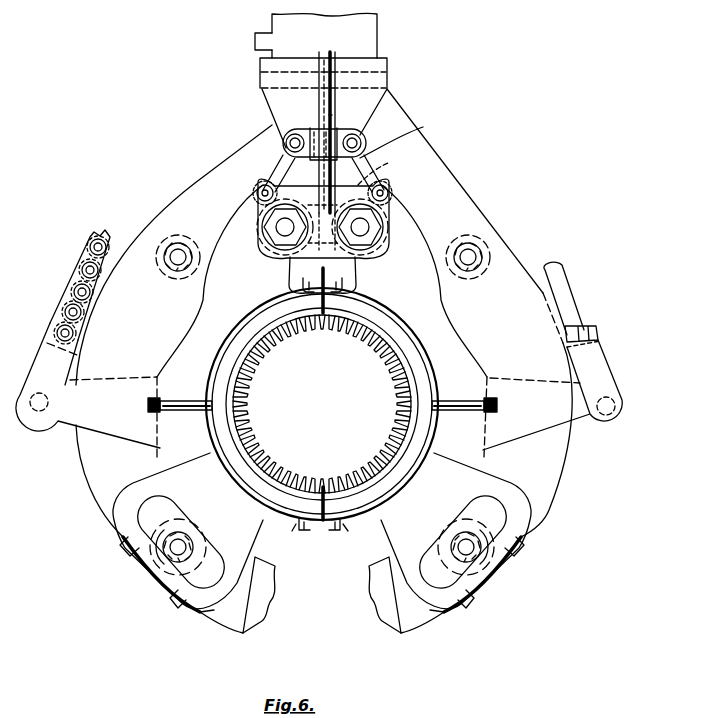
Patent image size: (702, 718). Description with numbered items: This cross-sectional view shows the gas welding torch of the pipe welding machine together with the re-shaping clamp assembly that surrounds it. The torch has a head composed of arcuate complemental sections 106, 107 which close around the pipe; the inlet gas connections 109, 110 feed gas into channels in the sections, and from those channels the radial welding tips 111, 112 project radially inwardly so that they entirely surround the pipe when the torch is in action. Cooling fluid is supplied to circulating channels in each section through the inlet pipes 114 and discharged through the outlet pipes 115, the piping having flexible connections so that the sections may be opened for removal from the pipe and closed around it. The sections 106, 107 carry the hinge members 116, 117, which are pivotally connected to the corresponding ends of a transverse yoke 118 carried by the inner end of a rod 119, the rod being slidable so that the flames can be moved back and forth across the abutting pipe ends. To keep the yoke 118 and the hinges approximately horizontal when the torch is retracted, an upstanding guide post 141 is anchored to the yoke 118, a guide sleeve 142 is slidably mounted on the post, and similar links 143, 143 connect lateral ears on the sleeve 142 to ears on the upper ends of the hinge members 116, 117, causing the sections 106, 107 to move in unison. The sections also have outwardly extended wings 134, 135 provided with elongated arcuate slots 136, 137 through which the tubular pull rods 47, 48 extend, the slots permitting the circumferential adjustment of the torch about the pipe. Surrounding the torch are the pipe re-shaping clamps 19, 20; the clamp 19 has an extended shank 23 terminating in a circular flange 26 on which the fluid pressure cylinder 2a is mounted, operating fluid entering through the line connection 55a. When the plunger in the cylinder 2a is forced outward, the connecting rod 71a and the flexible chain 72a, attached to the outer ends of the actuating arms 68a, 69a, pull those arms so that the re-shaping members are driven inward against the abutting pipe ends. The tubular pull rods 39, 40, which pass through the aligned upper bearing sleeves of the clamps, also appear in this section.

The fluid pressure cylinder 2a is at (378, 44).
The line connection 55a is at (256, 34).
The circular flange 26 is at (390, 84).
The guide post 141 is at (321, 101).
The guide sleeve 142 is at (338, 126).
The link 143 is at (278, 156).
The rod 119 is at (384, 169).
The inlet pipe 114 is at (303, 283).
The transverse yoke 118 is at (331, 289).
The extended shank 23 is at (469, 189).
The pipe re-shaping clamp 19 is at (551, 503).
The pipe re-shaping clamp 20 is at (82, 483).
The hinge member 117 is at (239, 254).
The hinge member 116 is at (405, 257).
The tubular pull rod 40 is at (168, 250).
The tubular pull rod 39 is at (480, 248).
The arcuate complemental section 106 is at (424, 384).
The arcuate complemental section 107 is at (226, 387).
The radial welding tip 111 is at (401, 403).
The radial welding tip 112 is at (253, 416).
The inlet gas connection 110 is at (186, 412).
The inlet gas connection 109 is at (458, 410).
The outlet pipe 115 is at (303, 529).
The actuating arm 69a is at (73, 421).
The flexible connecting member (chain) 72a is at (80, 267).
The actuating arm 68a is at (578, 428).
The connecting rod 71a is at (579, 294).
The outwardly extended wing 134 is at (478, 484).
The tubular pull rod 47 is at (483, 541).
The elongated arcuate slot 136 is at (446, 589).
The outwardly extended wing 135 is at (162, 477).
The elongated arcuate slot 137 is at (143, 521).
The tubular pull rod 48 is at (166, 541).